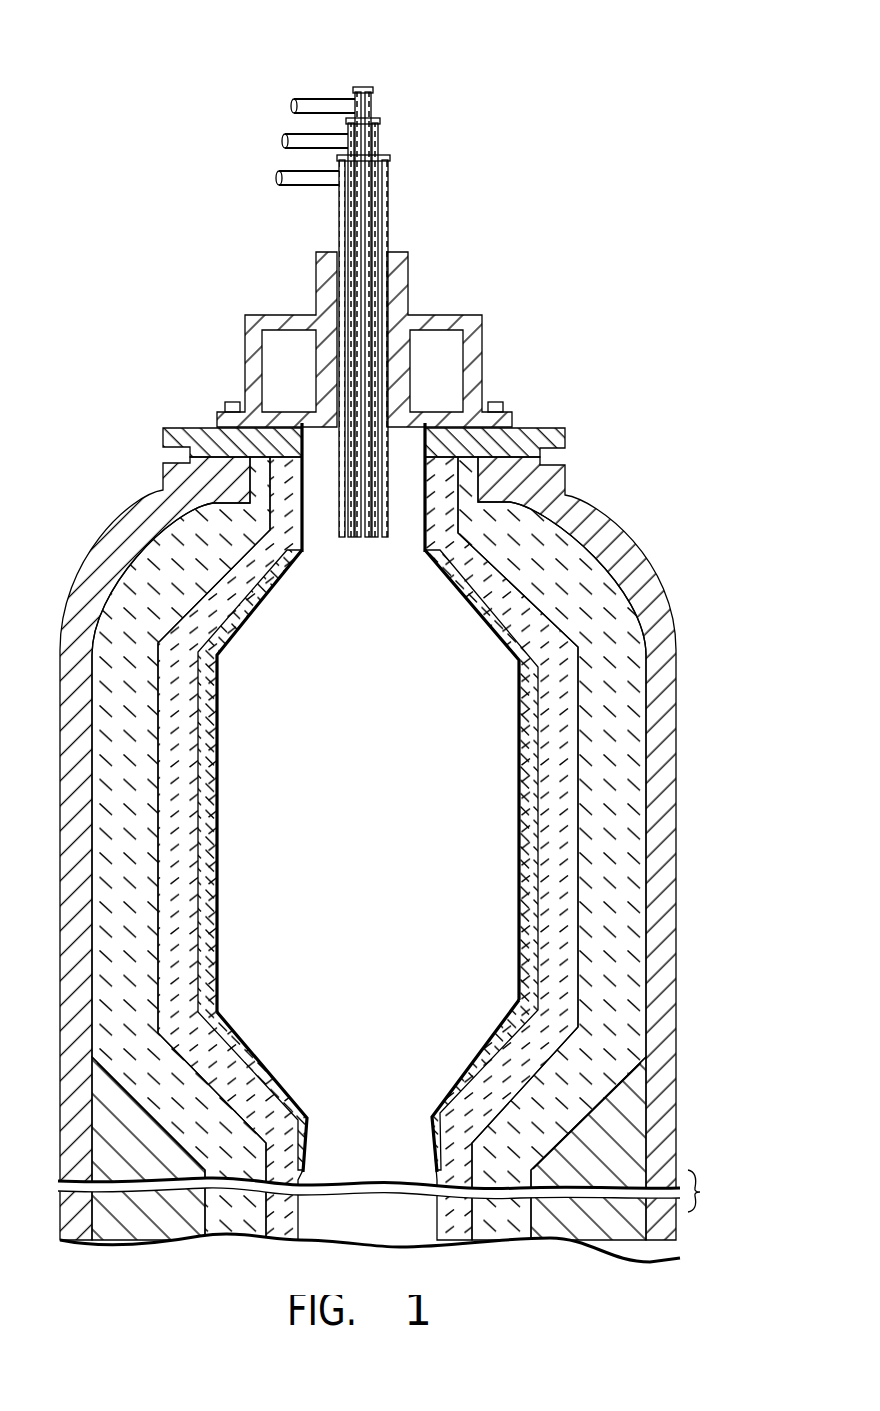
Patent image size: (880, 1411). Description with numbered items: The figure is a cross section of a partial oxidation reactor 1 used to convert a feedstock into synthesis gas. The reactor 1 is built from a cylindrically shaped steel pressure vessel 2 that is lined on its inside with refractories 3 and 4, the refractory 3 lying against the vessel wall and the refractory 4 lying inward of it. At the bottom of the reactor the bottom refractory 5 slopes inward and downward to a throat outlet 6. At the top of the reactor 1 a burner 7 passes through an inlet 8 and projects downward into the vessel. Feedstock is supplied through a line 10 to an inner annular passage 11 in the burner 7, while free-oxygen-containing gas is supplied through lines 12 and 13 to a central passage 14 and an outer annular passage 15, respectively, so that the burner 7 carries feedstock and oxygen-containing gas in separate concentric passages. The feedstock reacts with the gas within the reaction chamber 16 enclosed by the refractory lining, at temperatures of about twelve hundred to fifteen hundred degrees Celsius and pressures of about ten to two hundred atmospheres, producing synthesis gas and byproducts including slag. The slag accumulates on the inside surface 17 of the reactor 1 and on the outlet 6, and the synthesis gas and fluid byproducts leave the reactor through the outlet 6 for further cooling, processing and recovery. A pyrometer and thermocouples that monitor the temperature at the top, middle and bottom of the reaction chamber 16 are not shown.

The partial oxidation reactor 1 is at (606, 484).
The steel pressure vessel 2 is at (633, 563).
The refractory 3 is at (630, 693).
The refractory 4 is at (548, 697).
The bottom refractory 5 is at (277, 1077).
The throat outlet 6 is at (375, 1160).
The burner 7 is at (337, 76).
The inlet 8 is at (403, 483).
The line 10 is at (269, 142).
The inner annular passage 11 is at (378, 135).
The line 12 is at (284, 107).
The line 13 is at (260, 178).
The central passage 14 is at (388, 176).
The outer annular passage 15 is at (367, 101).
The reaction chamber 16 is at (373, 793).
The inside surface 17 is at (220, 657).